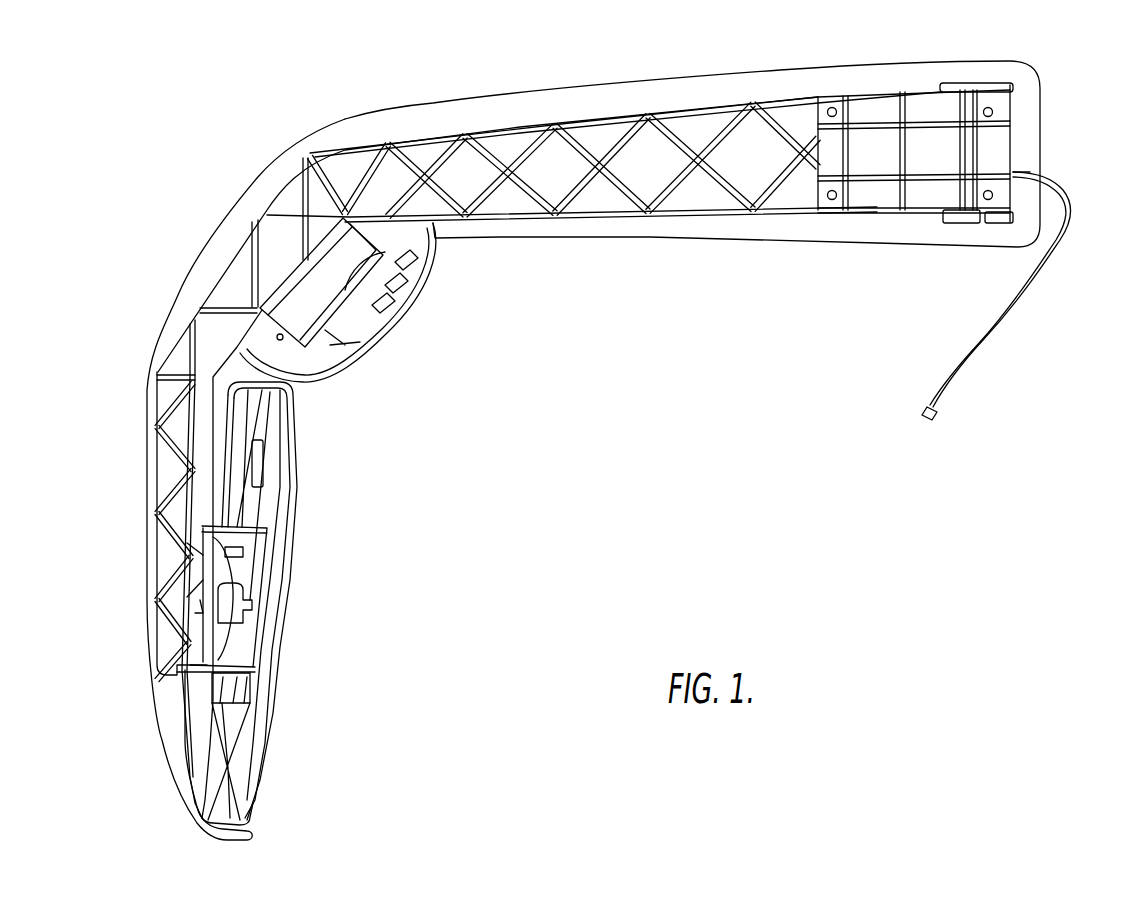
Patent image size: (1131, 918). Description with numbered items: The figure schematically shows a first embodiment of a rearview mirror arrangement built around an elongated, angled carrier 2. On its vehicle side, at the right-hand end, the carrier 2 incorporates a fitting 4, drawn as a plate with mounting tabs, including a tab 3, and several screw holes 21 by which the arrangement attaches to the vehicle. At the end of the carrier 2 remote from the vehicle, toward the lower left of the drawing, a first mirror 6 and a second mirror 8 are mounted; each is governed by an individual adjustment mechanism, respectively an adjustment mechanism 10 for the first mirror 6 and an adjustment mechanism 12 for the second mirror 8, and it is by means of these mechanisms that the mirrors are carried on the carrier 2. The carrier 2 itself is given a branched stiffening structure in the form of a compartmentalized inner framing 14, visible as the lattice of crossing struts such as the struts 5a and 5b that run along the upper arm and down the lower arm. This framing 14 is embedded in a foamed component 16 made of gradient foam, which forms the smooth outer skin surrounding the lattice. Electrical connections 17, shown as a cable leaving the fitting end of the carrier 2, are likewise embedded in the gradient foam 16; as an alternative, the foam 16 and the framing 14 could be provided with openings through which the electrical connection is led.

The carrier 2 is at (362, 116).
The foamed component 16 is at (578, 104).
The compartmentalized inner framing 14 is at (647, 217).
The lattice strut 5a is at (572, 194).
The lattice strut 5b is at (703, 200).
The screw holes 21 is at (832, 107).
The fitting 4 is at (938, 214).
The mounting tab 3 is at (968, 222).
The electrical connections 17 is at (957, 370).
The adjustment mechanism 12 is at (311, 294).
The second mirror 8 is at (405, 255).
The first mirror 6 is at (294, 490).
The adjustment mechanism 10 is at (244, 656).